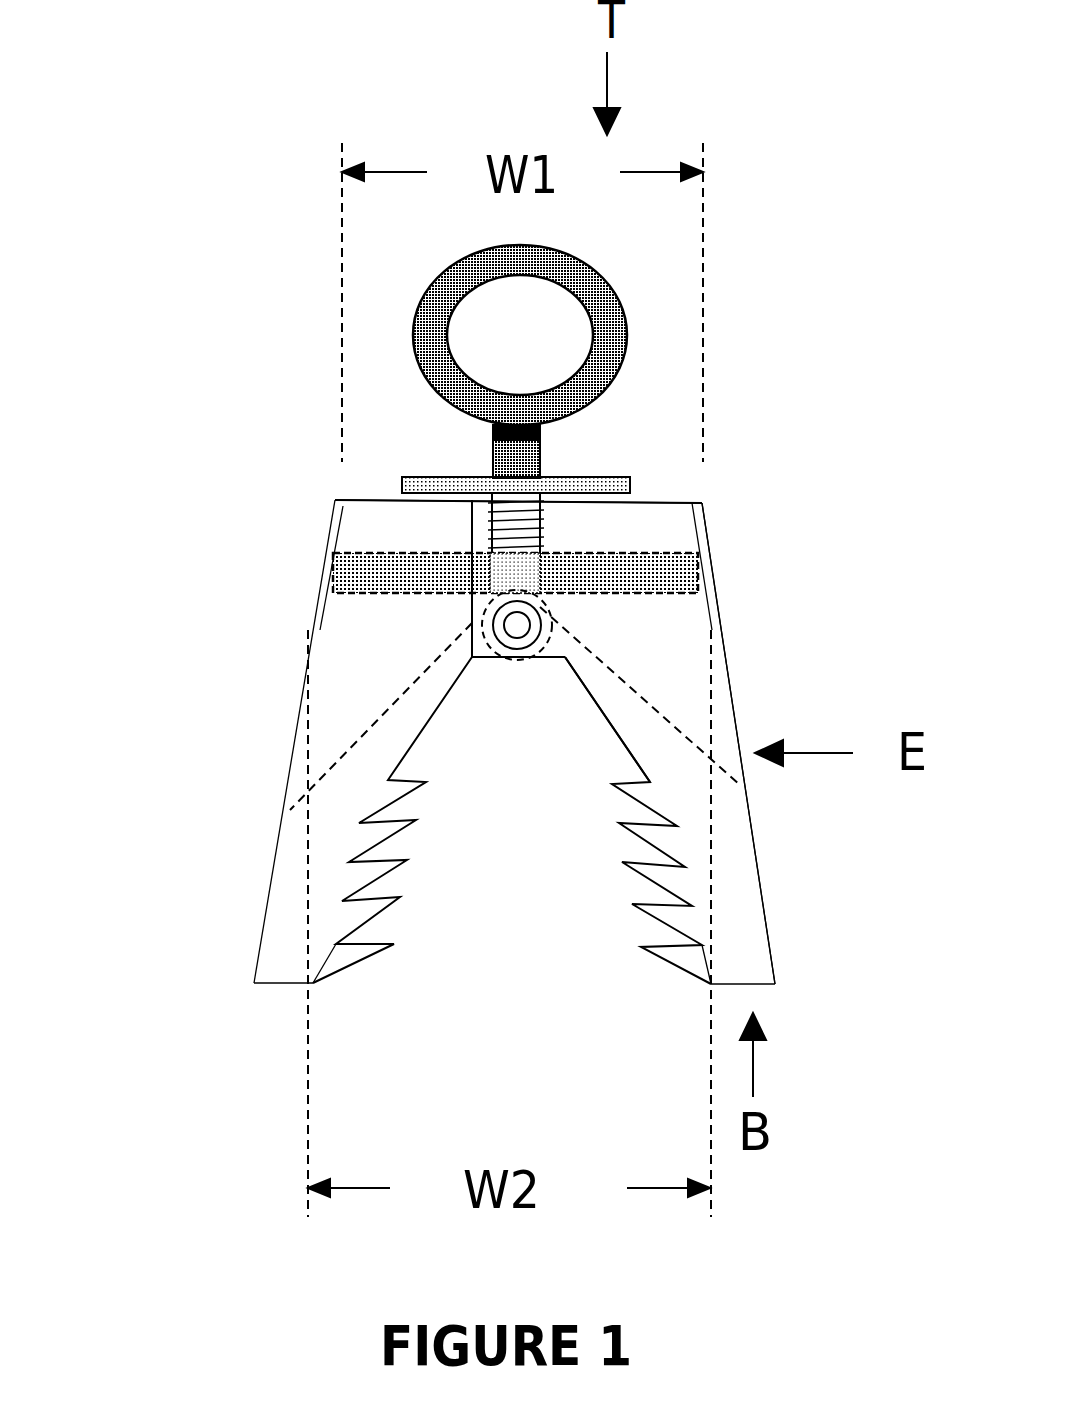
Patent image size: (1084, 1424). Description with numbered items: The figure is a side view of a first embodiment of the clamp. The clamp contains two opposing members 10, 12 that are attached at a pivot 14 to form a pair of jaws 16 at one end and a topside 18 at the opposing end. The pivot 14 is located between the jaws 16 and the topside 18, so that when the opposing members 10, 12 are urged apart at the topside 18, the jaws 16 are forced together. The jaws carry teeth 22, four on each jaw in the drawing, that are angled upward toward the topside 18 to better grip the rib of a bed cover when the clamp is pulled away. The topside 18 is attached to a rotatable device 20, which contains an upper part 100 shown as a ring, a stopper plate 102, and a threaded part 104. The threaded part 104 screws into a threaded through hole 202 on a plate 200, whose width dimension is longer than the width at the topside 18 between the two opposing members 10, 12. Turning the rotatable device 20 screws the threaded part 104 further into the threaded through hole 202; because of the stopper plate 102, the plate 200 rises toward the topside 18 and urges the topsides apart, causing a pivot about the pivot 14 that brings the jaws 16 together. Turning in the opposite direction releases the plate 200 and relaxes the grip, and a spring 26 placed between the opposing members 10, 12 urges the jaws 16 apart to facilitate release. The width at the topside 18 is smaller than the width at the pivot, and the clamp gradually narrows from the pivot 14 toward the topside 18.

The opposing member 10 is at (352, 665).
The opposing member 12 is at (672, 657).
The pivot 14 is at (520, 627).
The jaws 16 is at (521, 1034).
The topside 18 is at (367, 503).
The rotatable device 20 is at (741, 297).
The teeth 22 is at (393, 828).
The spring 26 is at (670, 727).
The upper part 100 is at (447, 348).
The stopper plate 102 is at (592, 477).
The threaded part 104 is at (537, 517).
The plate 200 is at (380, 570).
The threaded through hole 202 is at (513, 577).